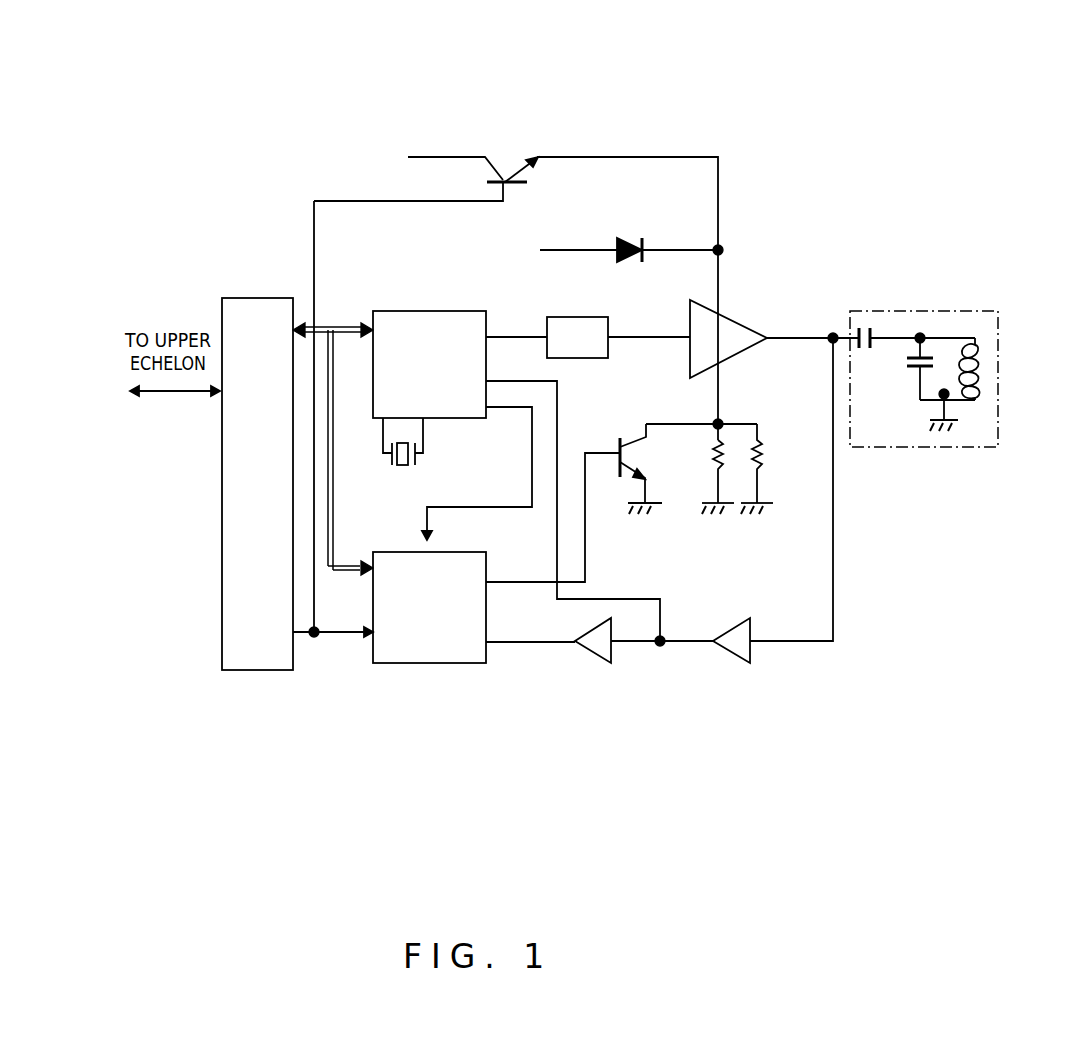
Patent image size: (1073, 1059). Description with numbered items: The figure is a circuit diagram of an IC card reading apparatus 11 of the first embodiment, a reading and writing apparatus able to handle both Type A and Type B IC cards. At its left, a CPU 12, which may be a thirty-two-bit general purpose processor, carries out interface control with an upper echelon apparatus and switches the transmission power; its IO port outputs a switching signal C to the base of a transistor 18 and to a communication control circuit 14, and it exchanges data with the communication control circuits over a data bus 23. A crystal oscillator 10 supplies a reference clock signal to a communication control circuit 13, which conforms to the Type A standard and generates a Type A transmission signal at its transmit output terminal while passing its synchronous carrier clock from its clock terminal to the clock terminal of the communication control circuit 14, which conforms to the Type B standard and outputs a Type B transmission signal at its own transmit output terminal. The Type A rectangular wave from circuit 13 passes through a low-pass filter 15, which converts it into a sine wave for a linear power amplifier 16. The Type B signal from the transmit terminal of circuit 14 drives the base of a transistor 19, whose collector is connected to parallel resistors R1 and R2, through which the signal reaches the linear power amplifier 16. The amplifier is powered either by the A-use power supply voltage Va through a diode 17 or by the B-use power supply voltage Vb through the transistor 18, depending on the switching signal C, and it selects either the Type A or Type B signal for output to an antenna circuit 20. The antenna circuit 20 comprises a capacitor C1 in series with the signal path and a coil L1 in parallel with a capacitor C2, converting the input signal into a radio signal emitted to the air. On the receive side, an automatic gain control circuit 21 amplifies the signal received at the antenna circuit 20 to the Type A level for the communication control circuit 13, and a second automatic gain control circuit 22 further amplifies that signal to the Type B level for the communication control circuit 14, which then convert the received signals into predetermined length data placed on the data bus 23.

The crystal oscillator 10 is at (403, 466).
The IC card reading apparatus 11 is at (663, 118).
The CPU 12 is at (236, 298).
The communication control circuit 13 is at (440, 311).
The communication control circuit 14 is at (490, 567).
The low-pass filter 15 is at (577, 317).
The linear power amplifier 16 is at (745, 323).
The diode 17 is at (625, 239).
The transistor 18 is at (513, 203).
The transistor 19 is at (632, 438).
The antenna circuit 20 is at (958, 311).
The automatic gain control circuit 21 is at (730, 655).
The automatic gain control circuit 22 is at (585, 652).
The data bus 23 is at (335, 326).
The switching signal C is at (339, 634).
The capacitor C1 is at (875, 330).
The capacitor C2 is at (915, 370).
The coil L1 is at (975, 380).
The resistor R1 is at (716, 455).
The resistor R2 is at (762, 462).
The A-use power supply voltage Va is at (570, 250).
The B-use power supply voltage Vb is at (462, 157).